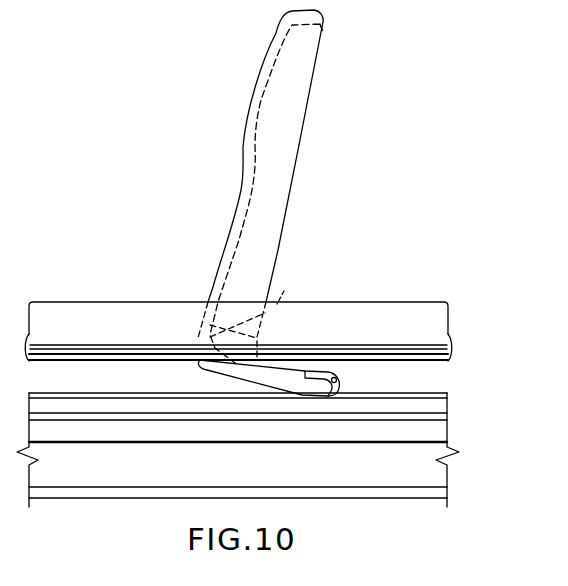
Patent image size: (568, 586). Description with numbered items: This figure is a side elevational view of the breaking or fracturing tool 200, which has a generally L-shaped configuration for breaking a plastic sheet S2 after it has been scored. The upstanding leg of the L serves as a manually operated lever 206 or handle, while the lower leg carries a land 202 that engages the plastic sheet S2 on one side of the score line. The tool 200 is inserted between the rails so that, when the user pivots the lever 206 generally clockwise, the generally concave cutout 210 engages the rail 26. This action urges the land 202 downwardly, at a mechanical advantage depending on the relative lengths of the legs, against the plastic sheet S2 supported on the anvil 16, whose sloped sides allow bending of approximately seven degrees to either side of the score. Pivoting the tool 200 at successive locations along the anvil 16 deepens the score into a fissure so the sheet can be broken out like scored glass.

The tool 200 is at (303, 122).
The lever 206 is at (256, 89).
The concave cutout 210 is at (297, 288).
The rail 26 is at (366, 306).
The land 202 is at (320, 398).
The plastic sheet S2 is at (432, 392).
The anvil 16 is at (160, 438).